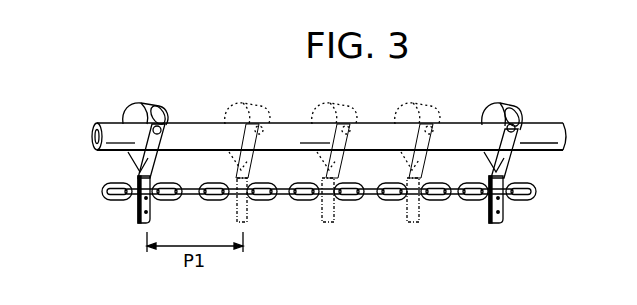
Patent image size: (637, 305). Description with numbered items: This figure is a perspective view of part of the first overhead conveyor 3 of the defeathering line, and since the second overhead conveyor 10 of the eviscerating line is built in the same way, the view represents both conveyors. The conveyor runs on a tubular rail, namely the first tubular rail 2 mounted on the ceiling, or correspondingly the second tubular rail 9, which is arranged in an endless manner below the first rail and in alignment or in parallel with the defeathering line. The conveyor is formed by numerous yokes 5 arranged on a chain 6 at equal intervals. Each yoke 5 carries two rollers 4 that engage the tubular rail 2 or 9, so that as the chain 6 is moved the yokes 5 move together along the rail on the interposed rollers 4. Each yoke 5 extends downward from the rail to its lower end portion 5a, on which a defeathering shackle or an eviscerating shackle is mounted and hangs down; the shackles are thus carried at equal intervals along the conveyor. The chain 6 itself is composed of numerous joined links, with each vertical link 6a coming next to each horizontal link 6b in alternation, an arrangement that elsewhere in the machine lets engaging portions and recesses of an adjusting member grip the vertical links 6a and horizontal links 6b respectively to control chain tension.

The first tubular rail 2 is at (342, 118).
The second tubular rail 9 is at (553, 129).
The first overhead conveyor 3 is at (284, 192).
The second overhead conveyor 10 is at (319, 207).
The roller 4 is at (154, 113).
The yoke 5 is at (154, 170).
The lower end portion of yoke 5a is at (330, 222).
The chain 6 is at (272, 202).
The vertical link 6a is at (173, 201).
The horizontal link 6b is at (197, 196).